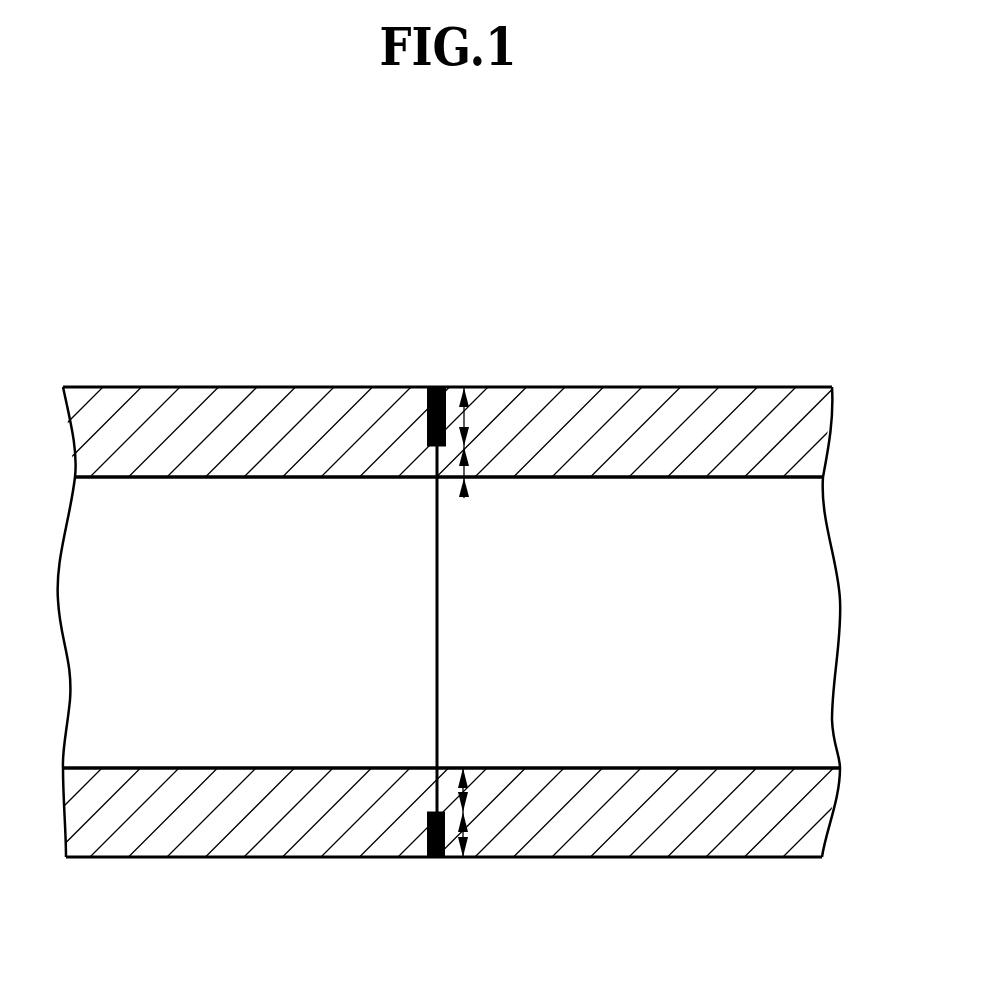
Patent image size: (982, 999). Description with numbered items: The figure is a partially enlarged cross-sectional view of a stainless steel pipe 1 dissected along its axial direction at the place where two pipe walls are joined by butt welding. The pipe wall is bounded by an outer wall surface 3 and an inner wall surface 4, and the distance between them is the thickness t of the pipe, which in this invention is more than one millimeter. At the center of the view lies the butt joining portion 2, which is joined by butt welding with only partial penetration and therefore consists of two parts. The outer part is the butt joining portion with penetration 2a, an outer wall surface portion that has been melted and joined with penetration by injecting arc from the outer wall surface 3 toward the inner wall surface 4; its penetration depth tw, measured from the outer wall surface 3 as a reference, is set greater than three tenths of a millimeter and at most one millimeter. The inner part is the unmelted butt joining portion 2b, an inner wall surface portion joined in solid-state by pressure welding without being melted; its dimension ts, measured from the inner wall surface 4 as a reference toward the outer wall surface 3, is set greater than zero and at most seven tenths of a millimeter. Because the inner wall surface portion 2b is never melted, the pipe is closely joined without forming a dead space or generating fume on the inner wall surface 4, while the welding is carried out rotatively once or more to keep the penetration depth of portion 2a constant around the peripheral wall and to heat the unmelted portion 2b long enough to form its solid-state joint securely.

The stainless steel pipe 1 is at (456, 607).
The butt joining portion 2 is at (325, 607).
The butt joining portion with penetration 2a is at (427, 413).
The unmelted butt joining portion 2b is at (437, 467).
The outer wall surface 3 is at (778, 387).
The inner wall surface 4 is at (573, 478).
The thickness of the stainless steel pipe t is at (505, 327).
The penetration depth tw is at (447, 415).
The dimension of the unmelted inner wall surface portion ts is at (470, 455).